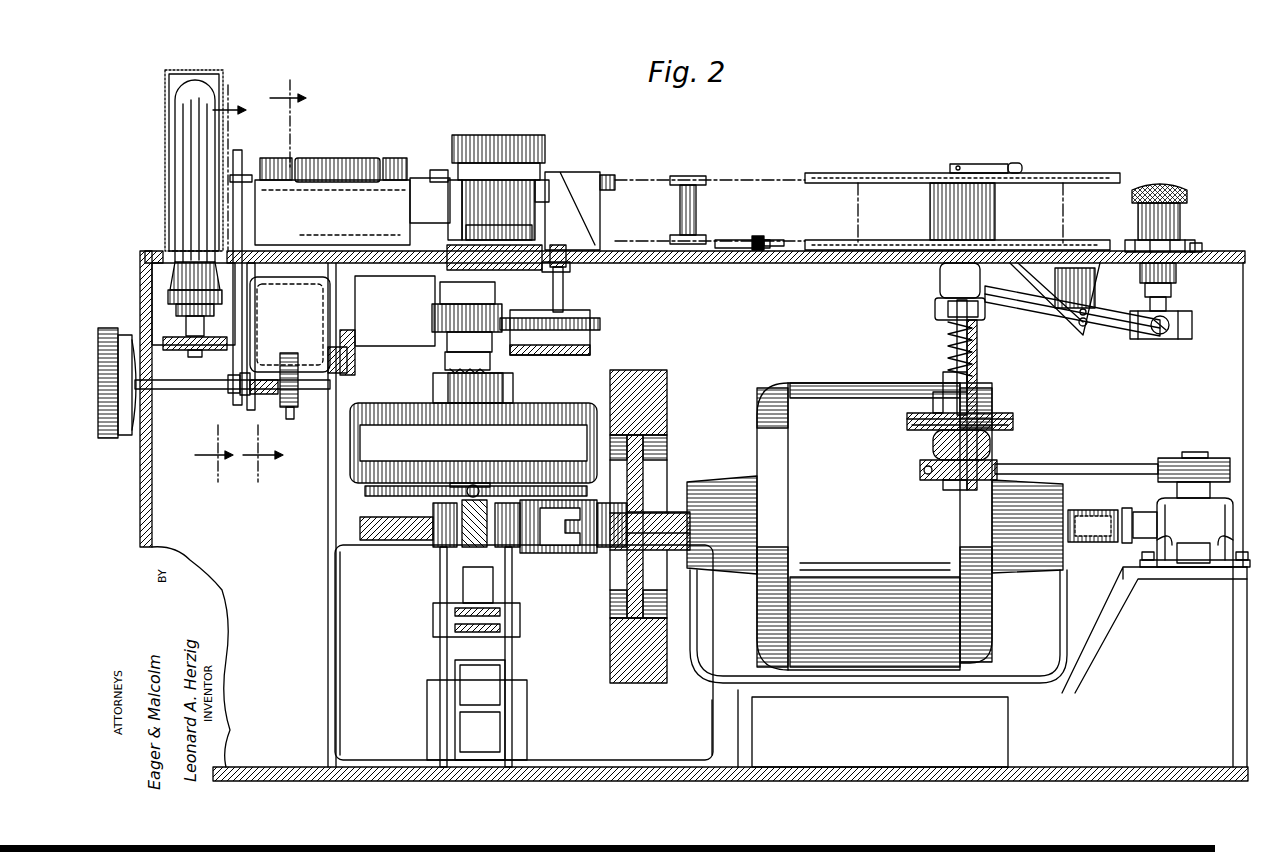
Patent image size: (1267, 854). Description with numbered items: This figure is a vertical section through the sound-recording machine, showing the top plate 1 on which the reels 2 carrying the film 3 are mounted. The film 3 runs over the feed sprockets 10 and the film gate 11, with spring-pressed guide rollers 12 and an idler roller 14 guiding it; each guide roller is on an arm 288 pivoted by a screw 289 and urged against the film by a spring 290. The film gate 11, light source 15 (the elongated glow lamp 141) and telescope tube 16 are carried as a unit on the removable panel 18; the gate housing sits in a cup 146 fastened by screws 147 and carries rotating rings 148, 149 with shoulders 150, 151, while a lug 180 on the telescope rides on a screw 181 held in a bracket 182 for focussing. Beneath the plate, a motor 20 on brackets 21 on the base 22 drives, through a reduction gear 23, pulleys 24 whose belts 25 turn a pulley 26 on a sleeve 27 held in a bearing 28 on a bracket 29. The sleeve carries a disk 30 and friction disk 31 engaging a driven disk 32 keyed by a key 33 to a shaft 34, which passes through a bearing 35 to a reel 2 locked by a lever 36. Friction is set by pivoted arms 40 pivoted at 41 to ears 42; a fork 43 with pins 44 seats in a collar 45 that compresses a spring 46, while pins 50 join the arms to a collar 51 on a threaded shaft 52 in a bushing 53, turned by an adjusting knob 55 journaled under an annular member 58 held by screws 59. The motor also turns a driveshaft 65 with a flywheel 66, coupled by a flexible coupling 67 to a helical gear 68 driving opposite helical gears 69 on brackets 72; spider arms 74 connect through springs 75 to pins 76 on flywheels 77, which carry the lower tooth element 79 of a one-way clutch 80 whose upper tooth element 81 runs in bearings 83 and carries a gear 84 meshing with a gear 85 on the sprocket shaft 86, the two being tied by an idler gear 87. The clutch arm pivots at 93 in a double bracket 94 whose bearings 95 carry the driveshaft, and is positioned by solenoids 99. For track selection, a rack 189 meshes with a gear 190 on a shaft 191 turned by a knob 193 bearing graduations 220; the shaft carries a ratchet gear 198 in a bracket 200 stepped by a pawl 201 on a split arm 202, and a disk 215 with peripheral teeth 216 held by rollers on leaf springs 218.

The top plate 1 is at (798, 263).
The reels 2 is at (866, 165).
The film 3 is at (765, 180).
The feed sprockets 10 is at (560, 175).
The film gate 11 is at (510, 150).
The guide rollers 12 is at (700, 160).
The idler roller 14 is at (612, 176).
The light source 15 is at (222, 78).
The telescope tube 16 is at (330, 190).
The panel 18 is at (393, 248).
The motor 20 is at (985, 612).
The brackets 21 is at (1112, 605).
The base 22 is at (845, 767).
The reduction gear 23 is at (1159, 532).
The pulleys 24 is at (1215, 458).
The belts 25 is at (1115, 464).
The pulley 26 is at (925, 480).
The sleeve 27 is at (950, 490).
The bearing 28 is at (933, 445).
The bracket 29 is at (933, 402).
The disk 30 is at (1013, 424).
The friction disk 31 is at (1013, 416).
The driven disk 32 is at (995, 413).
The key 33 is at (943, 380).
The shaft 34 is at (968, 350).
The bearing 35 is at (940, 280).
The lever 36 is at (990, 158).
The pivoted arms 40 is at (1115, 332).
The pivot 41 is at (1082, 330).
The ears 42 is at (1095, 290).
The fork 43 is at (935, 308).
The adjustable pins 44 is at (1020, 263).
The rotating collar 45 is at (950, 310).
The spring 46 is at (946, 334).
The pins 50 is at (1160, 334).
The collar 51 is at (1192, 326).
The shaft 52 is at (1167, 303).
The bushing 53 is at (1172, 290).
The adjusting knob 55 is at (1160, 185).
The annular member 58 is at (1135, 240).
The screws 59 is at (1198, 243).
The driveshaft 65 is at (672, 528).
The flywheel 66 is at (660, 405).
The flexible coupling 67 is at (580, 553).
The helical gear 68 is at (478, 547).
The helical gears 69 is at (375, 540).
The brackets 72 is at (475, 400).
The arms 74 is at (470, 483).
The springs 75 is at (380, 496).
The pins 76 is at (400, 486).
The flywheels 77 is at (473, 443).
The lower tooth element 79 is at (513, 380).
The one-way clutch 80 is at (495, 371).
The upper tooth element 81 is at (450, 345).
The bearings 83 is at (445, 292).
The gear 84 is at (445, 318).
The gear 85 is at (600, 323).
The shaft 86 is at (570, 268).
The idler gear 87 is at (585, 340).
The pivot 93 is at (433, 622).
The double bracket 94 is at (440, 652).
The bearings 95 is at (435, 547).
The solenoids 99 is at (427, 690).
The glow lamp 141 is at (185, 104).
The cup 146 is at (563, 290).
The screws 147 is at (560, 250).
The rotating ring 148 is at (480, 225).
The rotating ring 149 is at (455, 185).
The shoulder 150 is at (510, 240).
The shoulder 151 is at (536, 182).
The lug 180 is at (320, 158).
The screw 181 is at (440, 170).
The bracket 182 is at (278, 158).
The rack 189 is at (244, 395).
The gear 190 is at (230, 393).
The shaft 191 is at (190, 362).
The knob 193 is at (110, 440).
The ratchet gear 198 is at (288, 353).
The bracket 200 is at (290, 324).
The pawl 201 is at (291, 419).
The split arm 202 is at (265, 394).
The disk 215 is at (355, 340).
The peripheral teeth 216 is at (255, 322).
The leaf springs 218 is at (395, 311).
The graduations 220 is at (115, 328).
The arm 288 is at (722, 240).
The screw 289 is at (775, 240).
The spring 290 is at (758, 236).